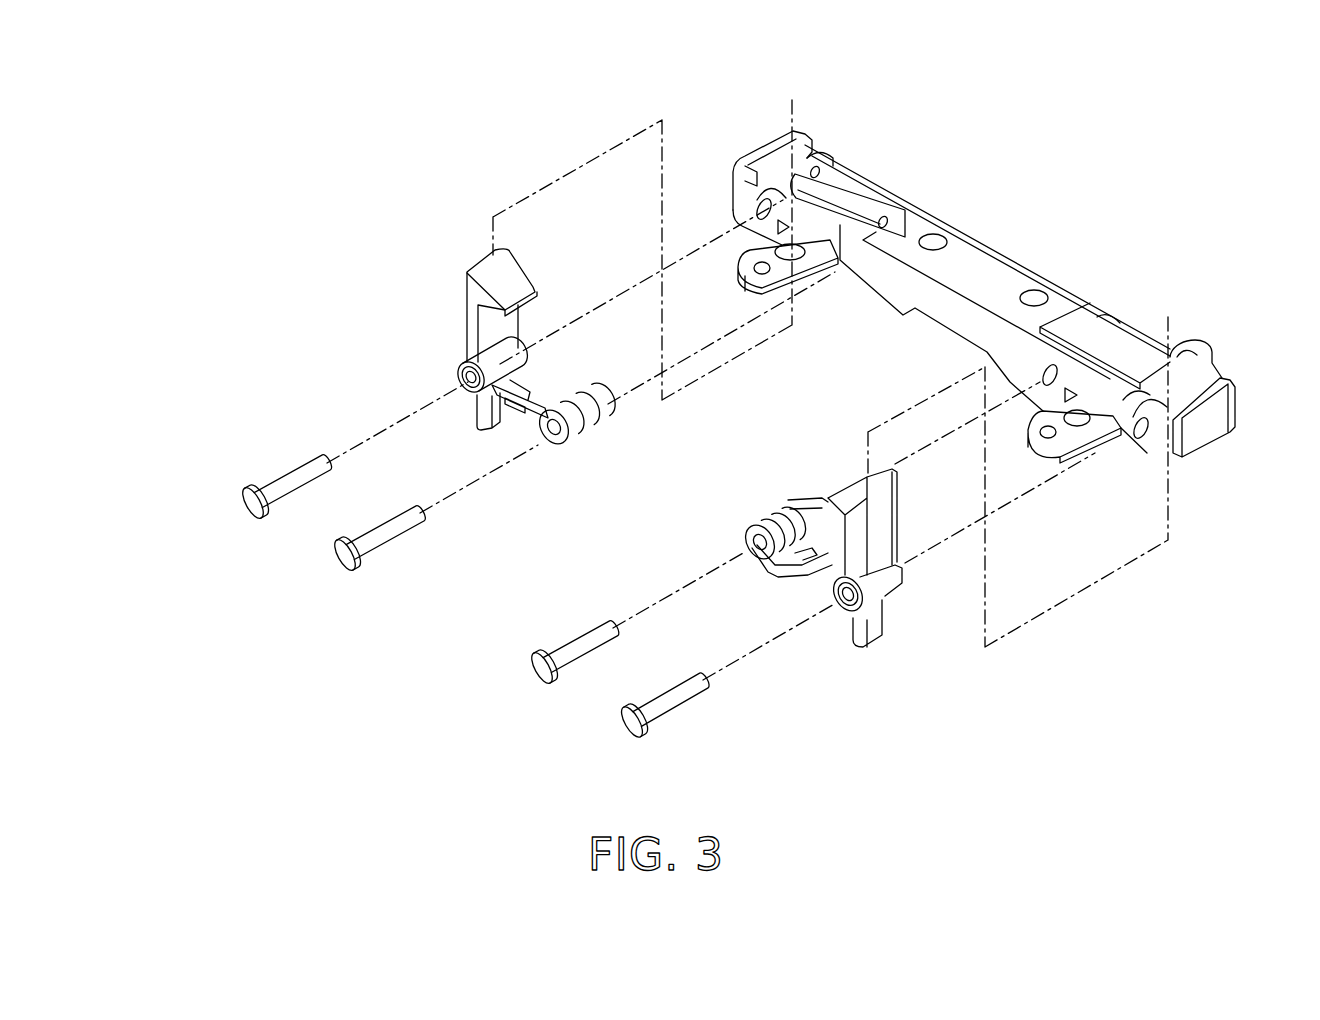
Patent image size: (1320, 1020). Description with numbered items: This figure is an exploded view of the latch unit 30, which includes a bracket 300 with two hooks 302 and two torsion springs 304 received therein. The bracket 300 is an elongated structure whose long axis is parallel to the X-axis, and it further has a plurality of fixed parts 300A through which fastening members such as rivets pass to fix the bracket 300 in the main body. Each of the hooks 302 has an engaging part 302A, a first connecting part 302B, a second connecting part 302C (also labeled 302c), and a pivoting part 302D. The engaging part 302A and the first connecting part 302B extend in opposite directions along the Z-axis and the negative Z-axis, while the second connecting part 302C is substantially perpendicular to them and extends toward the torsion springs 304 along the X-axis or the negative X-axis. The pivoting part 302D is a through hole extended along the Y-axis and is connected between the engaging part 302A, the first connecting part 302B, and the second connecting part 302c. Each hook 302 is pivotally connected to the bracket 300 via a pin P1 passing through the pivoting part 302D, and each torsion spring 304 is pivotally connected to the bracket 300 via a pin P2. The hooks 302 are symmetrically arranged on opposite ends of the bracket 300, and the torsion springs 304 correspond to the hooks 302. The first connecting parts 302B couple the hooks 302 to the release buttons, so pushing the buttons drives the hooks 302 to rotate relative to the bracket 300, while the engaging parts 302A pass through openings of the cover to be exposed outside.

The latch unit 30 is at (228, 170).
The bracket 300 is at (987, 267).
The fixed parts 300A is at (780, 267).
The hooks 302 is at (464, 251).
The engaging part 302A is at (475, 303).
The first connecting part 302B is at (478, 393).
The second connecting part 302C is at (820, 580).
The second connecting part 302c is at (535, 412).
The pivoting part 302D is at (455, 372).
The torsion springs 304 is at (623, 445).
The pin P1 is at (253, 510).
The pin P2 is at (346, 558).